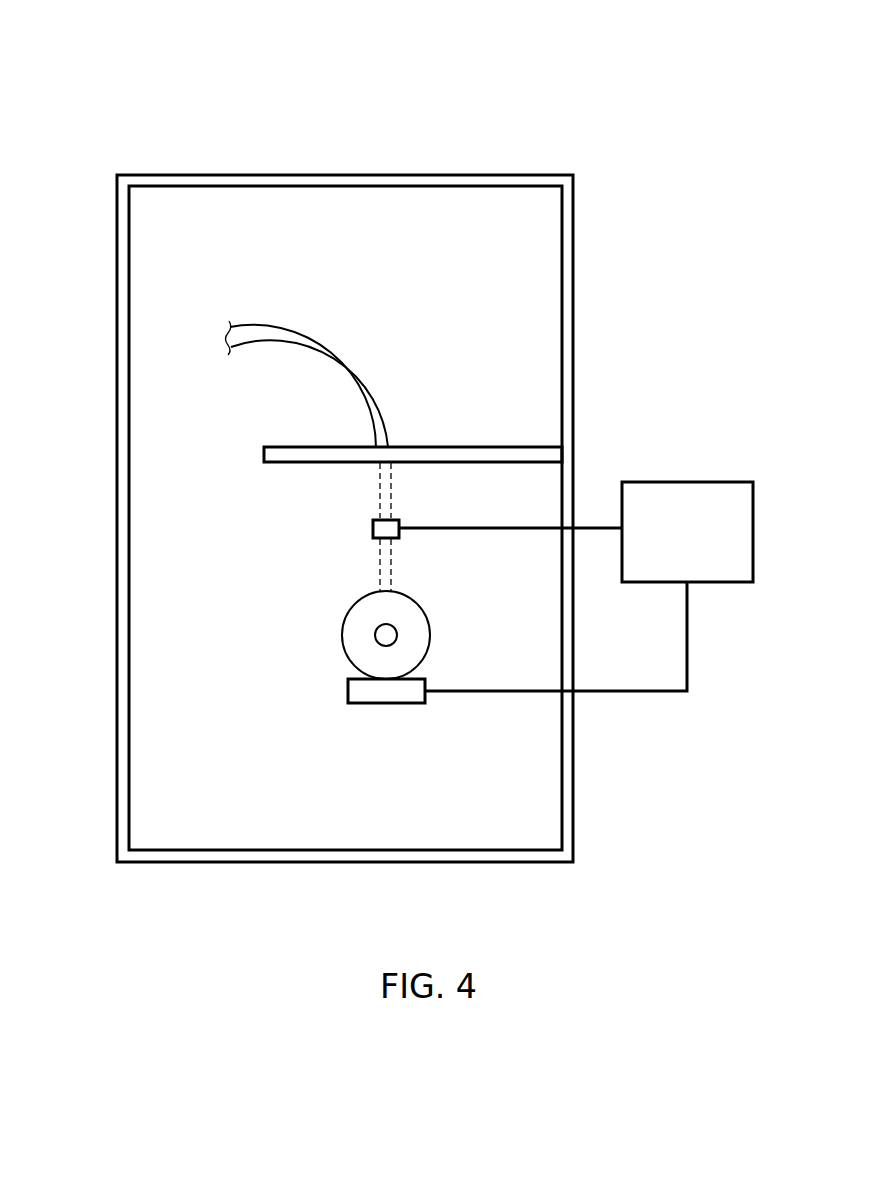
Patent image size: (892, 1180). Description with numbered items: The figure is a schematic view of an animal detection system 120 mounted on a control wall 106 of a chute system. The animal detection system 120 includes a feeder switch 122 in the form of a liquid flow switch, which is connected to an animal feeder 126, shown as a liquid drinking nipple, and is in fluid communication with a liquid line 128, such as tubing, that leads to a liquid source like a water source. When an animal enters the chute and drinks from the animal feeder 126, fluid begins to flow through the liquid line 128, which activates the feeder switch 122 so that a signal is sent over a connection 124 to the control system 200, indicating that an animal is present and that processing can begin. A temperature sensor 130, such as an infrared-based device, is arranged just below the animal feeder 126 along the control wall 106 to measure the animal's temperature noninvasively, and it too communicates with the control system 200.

The control wall 106 is at (124, 111).
The animal detection system 120 is at (598, 114).
The feeder switch 122 is at (372, 527).
The sensor signal line 124 is at (468, 527).
The animal feeder 126 is at (416, 604).
The liquid line 128 is at (323, 362).
The temperature sensor 130 is at (430, 680).
The control system 200 is at (678, 482).